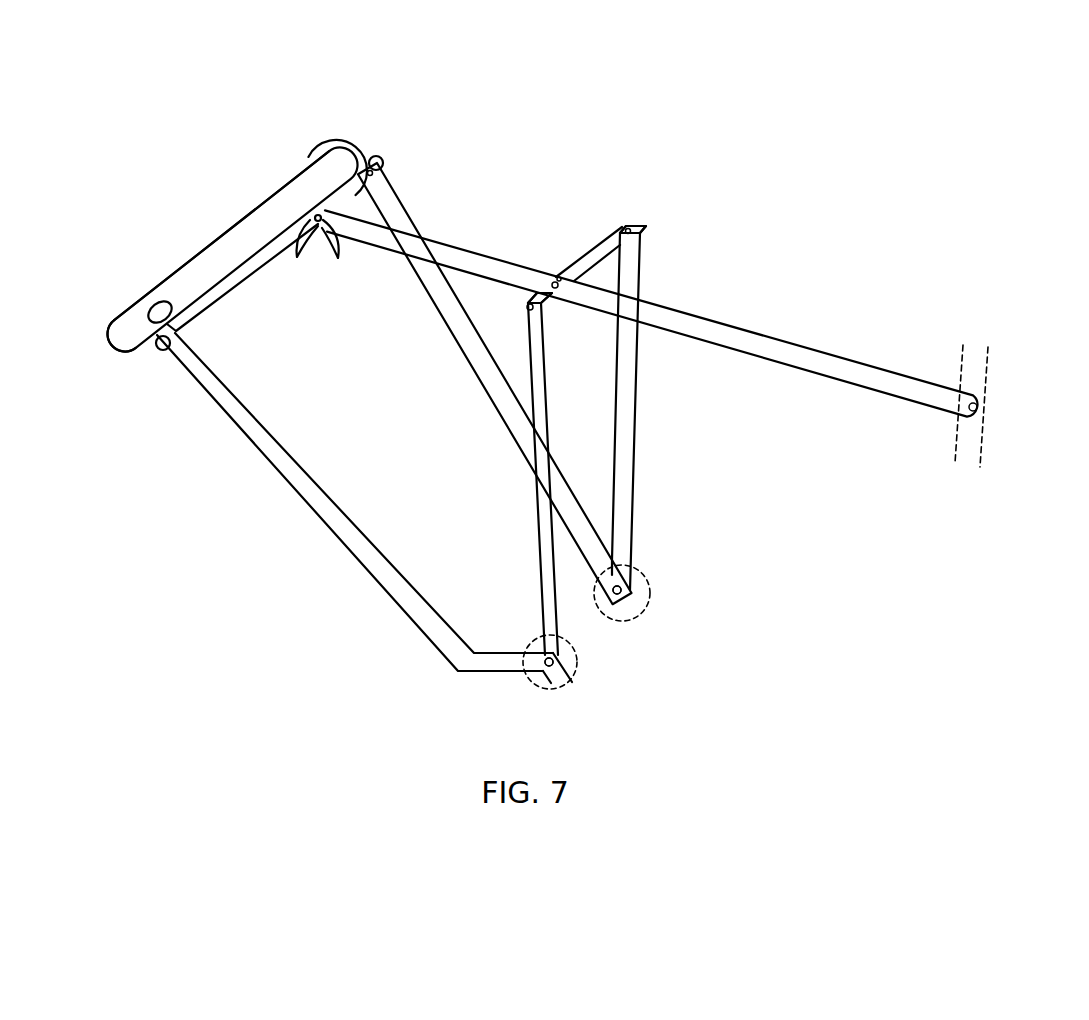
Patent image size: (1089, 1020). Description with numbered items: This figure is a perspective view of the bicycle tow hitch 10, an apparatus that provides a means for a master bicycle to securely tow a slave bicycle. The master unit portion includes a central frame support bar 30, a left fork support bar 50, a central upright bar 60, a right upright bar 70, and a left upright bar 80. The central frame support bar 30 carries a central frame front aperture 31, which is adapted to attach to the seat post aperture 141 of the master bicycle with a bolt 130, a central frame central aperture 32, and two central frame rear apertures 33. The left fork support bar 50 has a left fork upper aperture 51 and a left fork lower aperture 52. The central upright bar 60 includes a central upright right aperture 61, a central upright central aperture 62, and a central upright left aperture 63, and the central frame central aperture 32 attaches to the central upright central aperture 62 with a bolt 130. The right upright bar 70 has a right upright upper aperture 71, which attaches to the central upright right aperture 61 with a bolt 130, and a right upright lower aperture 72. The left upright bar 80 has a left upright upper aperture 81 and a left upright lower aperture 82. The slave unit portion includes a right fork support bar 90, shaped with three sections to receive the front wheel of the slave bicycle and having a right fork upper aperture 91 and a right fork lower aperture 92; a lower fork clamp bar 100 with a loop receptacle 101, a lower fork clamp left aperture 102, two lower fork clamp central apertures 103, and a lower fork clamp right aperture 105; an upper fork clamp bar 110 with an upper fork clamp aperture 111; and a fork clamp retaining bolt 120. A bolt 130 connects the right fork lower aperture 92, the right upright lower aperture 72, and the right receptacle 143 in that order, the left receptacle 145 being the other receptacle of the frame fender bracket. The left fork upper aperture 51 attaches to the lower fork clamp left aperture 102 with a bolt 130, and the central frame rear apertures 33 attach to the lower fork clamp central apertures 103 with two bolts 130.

The bicycle tow hitch 10 is at (123, 99).
The central frame support bar 30 is at (766, 336).
The central frame front aperture 31 is at (977, 417).
The central frame central aperture 32 is at (556, 289).
The central frame rear apertures 33 is at (327, 242).
The left fork support bar 50 is at (476, 368).
The left fork upper aperture 51 is at (380, 176).
The left fork lower aperture 52 is at (630, 603).
The central upright bar 60 is at (597, 248).
The central upright right aperture 61 is at (527, 305).
The central upright central aperture 62 is at (560, 275).
The central upright left aperture 63 is at (632, 228).
The right upright bar 70 is at (537, 516).
The right upright upper aperture 71 is at (530, 312).
The right upright lower aperture 72 is at (546, 650).
The left upright bar 80 is at (635, 465).
The left upright upper aperture 81 is at (642, 234).
The left upright lower aperture 82 is at (628, 577).
The right fork support bar 90 is at (298, 493).
The right fork upper aperture 91 is at (157, 352).
The right fork lower aperture 92 is at (556, 670).
The lower fork clamp bar 100 is at (267, 270).
The loop receptacle 101 is at (320, 150).
The lower fork clamp left aperture 102 is at (380, 157).
The lower fork clamp central apertures 103 is at (308, 245).
The lower fork clamp right aperture 105 is at (198, 328).
The upper fork clamp bar 110 is at (217, 241).
The upper fork clamp aperture 111 is at (149, 307).
The fork clamp retaining bolt 120 is at (158, 287).
The bolt 130 is at (620, 600).
The seat post aperture 141 is at (983, 399).
The right receptacle 143 is at (545, 675).
The left receptacle 145 is at (628, 587).